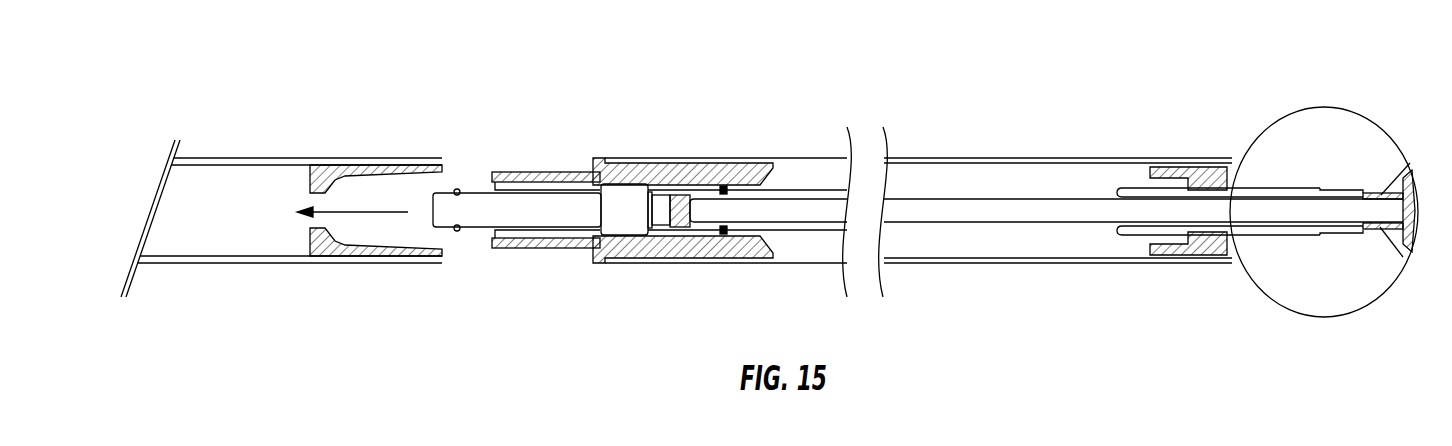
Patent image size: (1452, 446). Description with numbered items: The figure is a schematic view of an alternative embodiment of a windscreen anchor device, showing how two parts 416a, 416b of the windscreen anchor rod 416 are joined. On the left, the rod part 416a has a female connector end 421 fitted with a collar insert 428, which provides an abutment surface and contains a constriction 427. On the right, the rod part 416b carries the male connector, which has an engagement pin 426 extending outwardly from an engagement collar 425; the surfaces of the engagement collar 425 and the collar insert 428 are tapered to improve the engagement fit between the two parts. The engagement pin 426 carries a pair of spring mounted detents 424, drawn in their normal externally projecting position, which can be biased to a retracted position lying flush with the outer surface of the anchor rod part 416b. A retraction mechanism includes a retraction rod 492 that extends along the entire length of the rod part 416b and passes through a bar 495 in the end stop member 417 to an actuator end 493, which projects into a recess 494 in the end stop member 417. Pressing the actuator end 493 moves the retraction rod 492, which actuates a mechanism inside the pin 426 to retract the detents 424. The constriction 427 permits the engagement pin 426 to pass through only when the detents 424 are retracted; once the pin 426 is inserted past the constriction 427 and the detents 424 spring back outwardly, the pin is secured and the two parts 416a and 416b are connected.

The windscreen anchor rod 416 is at (670, 101).
The rod part 416a is at (208, 158).
The rod part 416b is at (953, 158).
The end stop member 417 is at (1287, 137).
The female connector end 421 is at (281, 188).
The spring mounted detents 424 is at (457, 189).
The engagement collar 425 is at (537, 248).
The engagement pin 426 is at (468, 207).
The constriction 427 is at (350, 210).
The collar insert 428 is at (353, 253).
The retraction rod 492 is at (1024, 208).
The actuator end 493 is at (1380, 228).
The recess 494 is at (1381, 194).
The bar 495 is at (1293, 188).